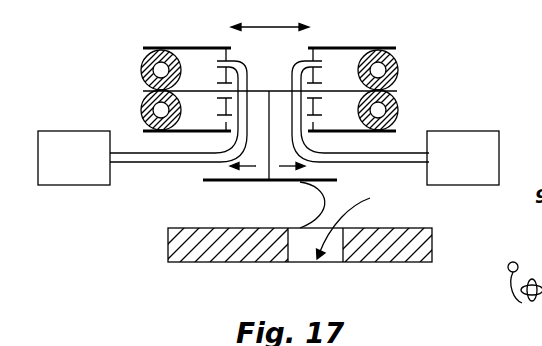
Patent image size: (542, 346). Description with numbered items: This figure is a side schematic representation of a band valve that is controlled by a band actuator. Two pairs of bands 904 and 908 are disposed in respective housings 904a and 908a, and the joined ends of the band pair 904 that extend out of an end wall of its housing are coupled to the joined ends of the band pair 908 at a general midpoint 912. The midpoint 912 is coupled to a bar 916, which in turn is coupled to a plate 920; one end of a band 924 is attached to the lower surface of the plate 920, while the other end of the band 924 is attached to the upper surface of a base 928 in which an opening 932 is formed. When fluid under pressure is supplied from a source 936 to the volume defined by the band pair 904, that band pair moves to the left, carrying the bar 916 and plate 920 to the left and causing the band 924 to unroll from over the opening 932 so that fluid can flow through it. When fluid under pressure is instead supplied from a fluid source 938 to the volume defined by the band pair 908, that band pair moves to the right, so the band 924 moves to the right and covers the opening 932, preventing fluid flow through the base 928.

The band pair 904 is at (132, 92).
The housing 904a is at (183, 48).
The band pair 908 is at (416, 89).
The housing 908a is at (345, 48).
The midpoint 912 is at (271, 90).
The bar 916 is at (262, 148).
The plate 920 is at (335, 178).
The band 924 is at (322, 195).
The base 928 is at (428, 238).
The opening 932 is at (303, 252).
The source 936 is at (40, 143).
The fluid source 938 is at (462, 132).